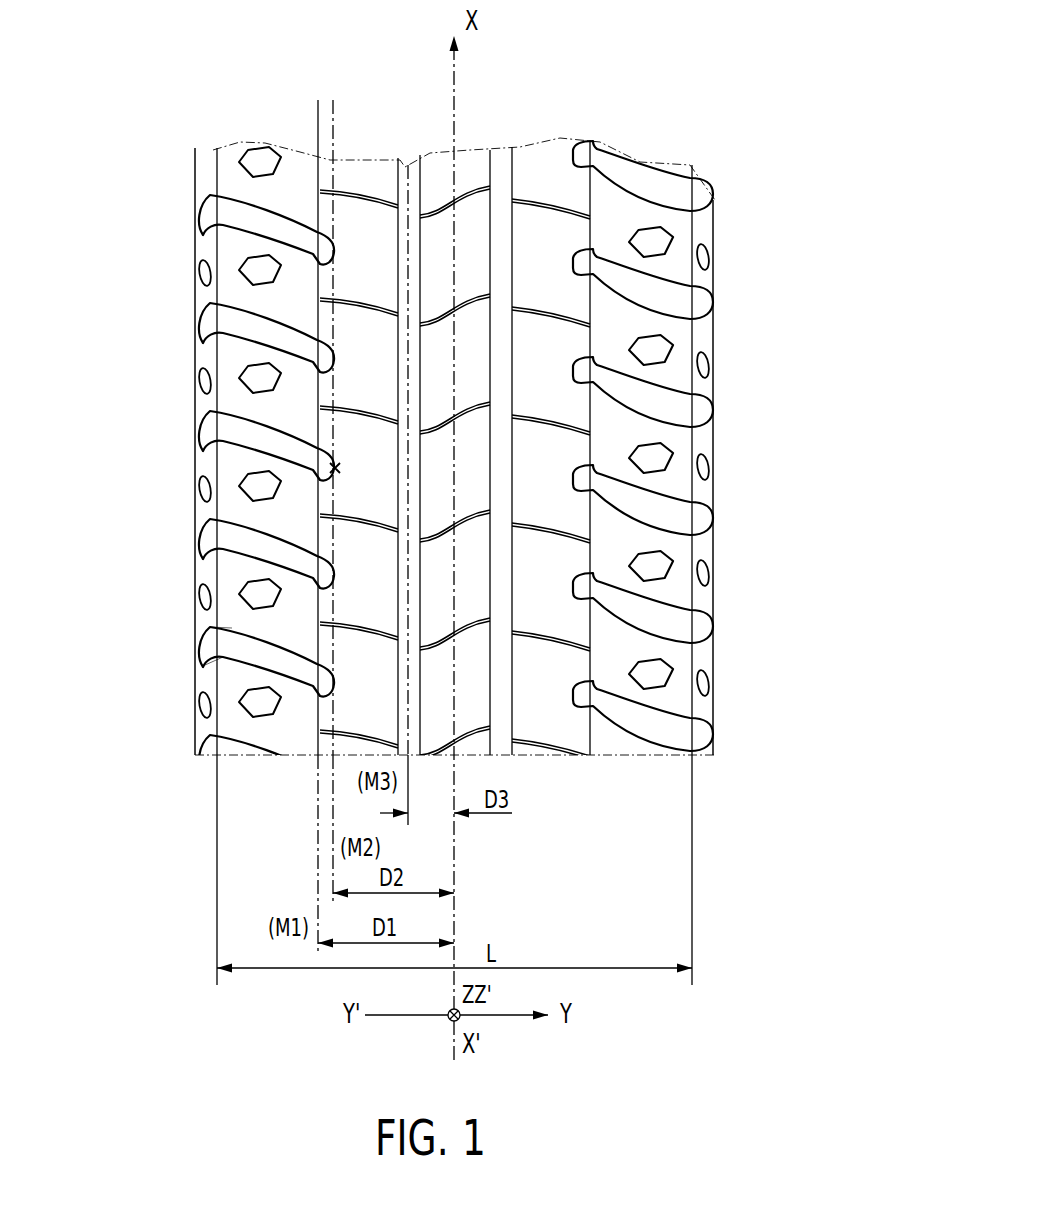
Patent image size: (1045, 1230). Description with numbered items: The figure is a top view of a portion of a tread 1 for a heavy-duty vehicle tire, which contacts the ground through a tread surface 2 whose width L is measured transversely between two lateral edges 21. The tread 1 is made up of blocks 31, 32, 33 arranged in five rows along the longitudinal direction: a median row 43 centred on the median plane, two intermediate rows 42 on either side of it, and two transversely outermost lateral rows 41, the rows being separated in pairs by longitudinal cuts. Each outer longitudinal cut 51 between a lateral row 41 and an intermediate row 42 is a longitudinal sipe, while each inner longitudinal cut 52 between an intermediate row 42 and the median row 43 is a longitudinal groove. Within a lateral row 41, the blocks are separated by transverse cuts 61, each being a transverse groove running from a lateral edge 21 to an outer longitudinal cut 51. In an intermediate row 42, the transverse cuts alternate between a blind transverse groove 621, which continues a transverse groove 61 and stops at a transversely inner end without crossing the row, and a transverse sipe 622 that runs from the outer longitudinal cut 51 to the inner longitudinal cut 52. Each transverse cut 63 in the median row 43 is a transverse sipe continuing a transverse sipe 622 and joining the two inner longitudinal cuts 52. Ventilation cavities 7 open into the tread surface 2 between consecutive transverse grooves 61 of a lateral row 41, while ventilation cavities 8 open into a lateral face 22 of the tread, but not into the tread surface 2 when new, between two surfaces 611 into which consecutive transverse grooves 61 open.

The tread 1 is at (188, 78).
The tread surface 2 is at (557, 140).
The ventilation cavity 7 is at (657, 455).
The ventilation cavity 8 is at (712, 565).
The lateral edge 21 is at (697, 232).
The lateral face 22 is at (702, 337).
The block 31 is at (245, 185).
The block 32 is at (355, 273).
The block 33 is at (440, 377).
The lateral row 41 is at (262, 143).
The intermediate row 42 is at (370, 150).
The median row 43 is at (437, 148).
The outer longitudinal cut 51 is at (315, 533).
The inner longitudinal cut 52 is at (398, 608).
The transverse cut 61 is at (270, 655).
The surface 611 is at (220, 648).
The blind transverse groove 621 is at (322, 688).
The transverse sipe 622 is at (345, 750).
The transverse cut 63 is at (475, 632).